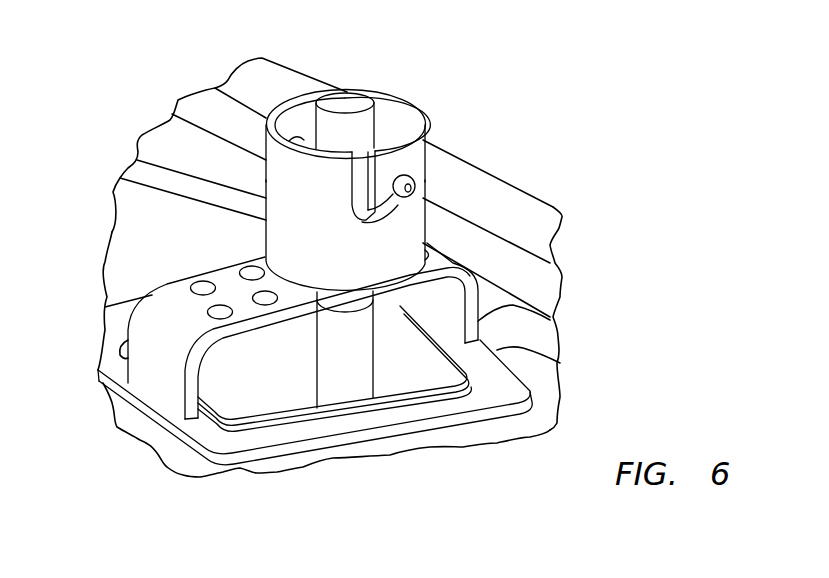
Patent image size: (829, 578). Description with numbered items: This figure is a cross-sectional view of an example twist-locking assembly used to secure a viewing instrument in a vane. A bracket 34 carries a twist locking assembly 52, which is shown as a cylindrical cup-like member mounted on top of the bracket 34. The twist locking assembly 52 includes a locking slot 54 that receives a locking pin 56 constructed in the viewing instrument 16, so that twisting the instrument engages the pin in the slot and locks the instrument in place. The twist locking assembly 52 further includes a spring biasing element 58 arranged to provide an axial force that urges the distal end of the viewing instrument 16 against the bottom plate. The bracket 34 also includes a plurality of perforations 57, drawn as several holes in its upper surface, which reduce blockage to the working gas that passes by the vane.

The viewing instrument 16 is at (343, 382).
The bracket 34 is at (260, 319).
The twist locking assembly 52 is at (413, 105).
The locking slot 54 is at (423, 228).
The locking pin 56 is at (412, 187).
The perforations 57 is at (262, 296).
The spring biasing element 58 is at (357, 195).